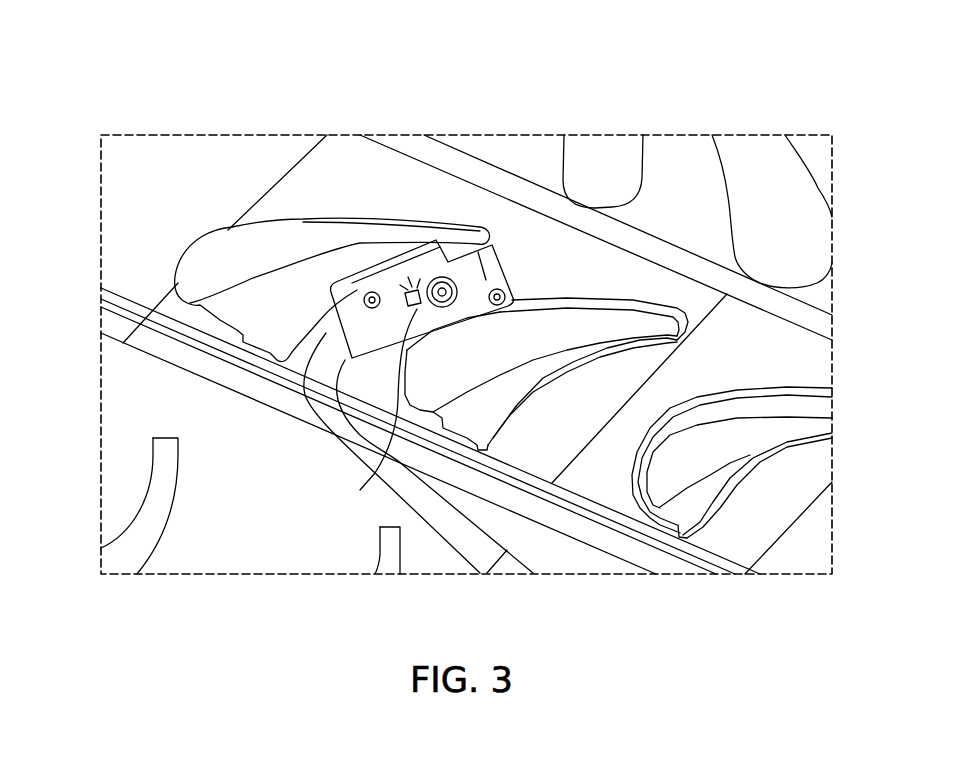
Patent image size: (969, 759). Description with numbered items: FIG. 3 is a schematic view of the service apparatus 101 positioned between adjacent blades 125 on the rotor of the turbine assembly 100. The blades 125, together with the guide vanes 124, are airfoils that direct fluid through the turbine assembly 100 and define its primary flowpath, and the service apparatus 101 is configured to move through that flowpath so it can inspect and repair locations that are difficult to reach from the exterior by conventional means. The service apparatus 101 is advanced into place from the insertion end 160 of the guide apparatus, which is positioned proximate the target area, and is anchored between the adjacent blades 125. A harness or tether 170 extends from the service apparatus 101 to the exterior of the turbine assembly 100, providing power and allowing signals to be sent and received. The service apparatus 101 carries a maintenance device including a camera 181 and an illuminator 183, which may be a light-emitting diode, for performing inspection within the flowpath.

The turbine assembly 100 is at (152, 74).
The service apparatus 101 is at (350, 437).
The guide vanes 124 is at (752, 165).
The blades 125 is at (306, 233).
The insertion end 160 is at (520, 578).
The tether 170 is at (458, 578).
The camera 181 is at (441, 292).
The illuminator 183 is at (360, 490).